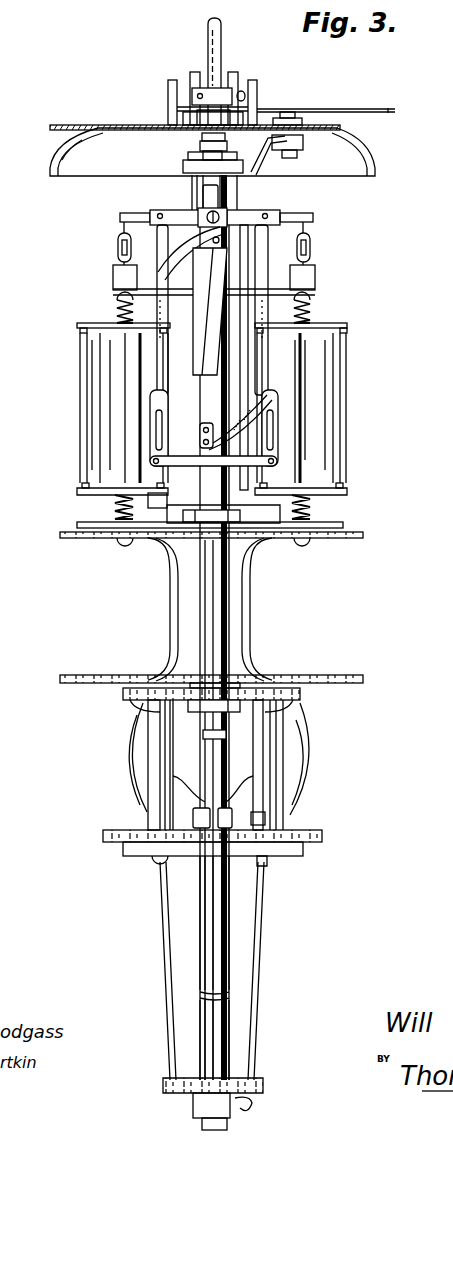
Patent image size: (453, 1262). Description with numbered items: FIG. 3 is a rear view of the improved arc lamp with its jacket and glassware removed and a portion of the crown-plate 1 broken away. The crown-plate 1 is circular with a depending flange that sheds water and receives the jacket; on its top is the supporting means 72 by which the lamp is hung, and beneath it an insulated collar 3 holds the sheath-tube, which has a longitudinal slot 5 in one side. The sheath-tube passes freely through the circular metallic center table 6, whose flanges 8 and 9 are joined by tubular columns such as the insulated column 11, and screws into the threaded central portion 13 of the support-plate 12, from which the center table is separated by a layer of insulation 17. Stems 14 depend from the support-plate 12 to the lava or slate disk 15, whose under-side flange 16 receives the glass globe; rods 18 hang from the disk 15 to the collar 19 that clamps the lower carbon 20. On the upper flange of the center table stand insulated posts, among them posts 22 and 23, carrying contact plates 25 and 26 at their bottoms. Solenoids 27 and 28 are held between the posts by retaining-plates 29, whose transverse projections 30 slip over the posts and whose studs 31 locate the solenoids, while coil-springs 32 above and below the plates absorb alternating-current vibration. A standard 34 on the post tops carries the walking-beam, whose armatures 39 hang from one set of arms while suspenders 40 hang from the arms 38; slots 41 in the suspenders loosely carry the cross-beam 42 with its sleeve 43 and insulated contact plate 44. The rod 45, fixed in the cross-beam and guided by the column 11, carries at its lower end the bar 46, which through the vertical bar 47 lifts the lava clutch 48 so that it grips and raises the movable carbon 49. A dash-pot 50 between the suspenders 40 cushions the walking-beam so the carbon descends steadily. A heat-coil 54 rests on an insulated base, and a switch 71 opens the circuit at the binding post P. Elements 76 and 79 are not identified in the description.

The crown-plate 1 is at (372, 156).
The collar 3 is at (10, 131).
The longitudinal continuous slot 5 is at (213, 192).
The center table 6 is at (252, 610).
The flange 8 is at (345, 540).
The flange 9 is at (350, 680).
The tubular column 11 is at (208, 597).
The support-plate 12 is at (180, 695).
The enlarged central portion 13 is at (192, 714).
The stems 14 is at (150, 810).
The disk 15 is at (322, 836).
The circular continuous flange 16 is at (283, 856).
The layer of insulation 17 is at (300, 690).
The depending metallic rods 18 is at (165, 940).
The collar 19 is at (202, 1096).
The lower carbon 20 is at (206, 1000).
The post 22 is at (303, 365).
The post 23 is at (120, 347).
The contact plate 25 is at (335, 529).
The contact plate 26 is at (97, 522).
The solenoid 27 is at (332, 386).
The solenoid 28 is at (100, 425).
The retaining-plates 29 is at (100, 323).
The transversely extending projections 30 is at (120, 326).
The vertical projecting studs 31 is at (80, 342).
The coil-springs 32 is at (112, 300).
The standard 34 is at (215, 197).
The arms 38 is at (243, 217).
The armatures 39 is at (135, 275).
The suspenders 40 is at (266, 272).
The longitudinal slots 41 is at (158, 430).
The cross-beam 42 is at (250, 466).
The sleeve 43 is at (210, 478).
The contact plate 44 is at (206, 536).
The vertically disposed rod 45 is at (225, 703).
The bar 46 is at (223, 743).
The vertical bar 47 is at (210, 756).
The clutch 48 is at (202, 818).
The movable carbon 49 is at (202, 880).
The dash-pot 50 is at (203, 322).
The heat-coil 54 is at (277, 243).
The switch 71 is at (262, 150).
The supporting means 72 is at (222, 76).
The adjacent figure label 76 is at (10, 298).
The adjacent figure label 79 is at (10, 233).
The binding post P is at (212, 105).